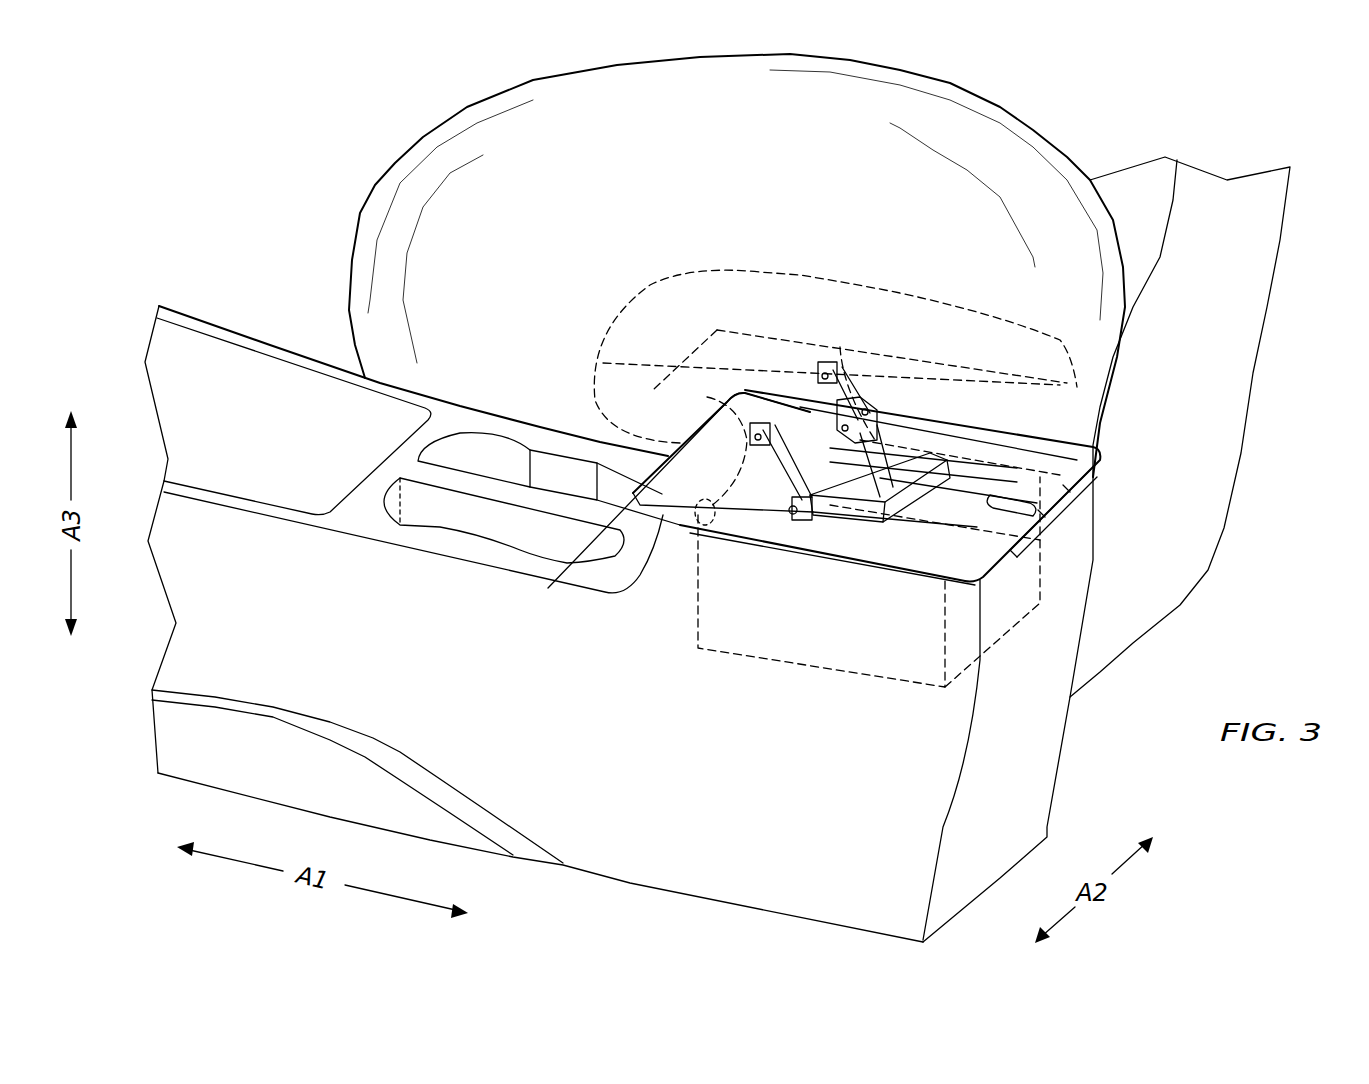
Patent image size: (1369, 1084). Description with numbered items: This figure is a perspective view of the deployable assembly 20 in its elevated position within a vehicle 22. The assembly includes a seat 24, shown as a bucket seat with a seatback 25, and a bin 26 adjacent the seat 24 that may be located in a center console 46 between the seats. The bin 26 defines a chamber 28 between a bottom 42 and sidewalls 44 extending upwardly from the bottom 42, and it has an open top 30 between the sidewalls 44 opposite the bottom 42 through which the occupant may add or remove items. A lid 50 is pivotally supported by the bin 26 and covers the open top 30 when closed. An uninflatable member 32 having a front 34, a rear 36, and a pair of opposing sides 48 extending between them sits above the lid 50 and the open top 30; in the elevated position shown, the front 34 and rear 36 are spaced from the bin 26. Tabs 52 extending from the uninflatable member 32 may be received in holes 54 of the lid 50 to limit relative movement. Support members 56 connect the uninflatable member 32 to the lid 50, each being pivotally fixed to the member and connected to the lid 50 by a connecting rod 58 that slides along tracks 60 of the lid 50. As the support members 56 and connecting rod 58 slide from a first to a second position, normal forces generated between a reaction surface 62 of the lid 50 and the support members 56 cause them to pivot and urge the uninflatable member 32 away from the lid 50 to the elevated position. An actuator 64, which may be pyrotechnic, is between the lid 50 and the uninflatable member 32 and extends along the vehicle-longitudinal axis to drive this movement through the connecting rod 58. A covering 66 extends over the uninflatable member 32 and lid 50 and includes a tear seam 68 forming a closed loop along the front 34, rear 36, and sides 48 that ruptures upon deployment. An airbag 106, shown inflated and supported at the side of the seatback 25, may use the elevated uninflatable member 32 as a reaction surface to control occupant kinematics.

The deployable assembly 20 is at (545, 284).
The vehicle 22 is at (300, 226).
The seat 24 is at (1137, 190).
The seatback 25 is at (1243, 263).
The bin 26 is at (757, 618).
The chamber 28 is at (836, 617).
The open top 30 is at (727, 478).
The uninflatable member 32 is at (913, 293).
The front 34 is at (583, 398).
The rear 36 is at (1103, 460).
The bottom 42 is at (830, 670).
The sidewalls 44 is at (697, 618).
The center console 46 is at (419, 637).
The opposing sides 48 is at (790, 342).
The lid 50 is at (597, 583).
The tabs 52 is at (727, 407).
The holes 54 is at (718, 520).
The support members 56 is at (838, 390).
The connecting rod 58 is at (947, 447).
The tracks 60 is at (1060, 447).
The reaction surface 62 is at (827, 440).
The actuator 64 is at (1053, 520).
The covering 66 is at (693, 290).
The tear seam 68 is at (955, 440).
The airbag 106 is at (427, 177).